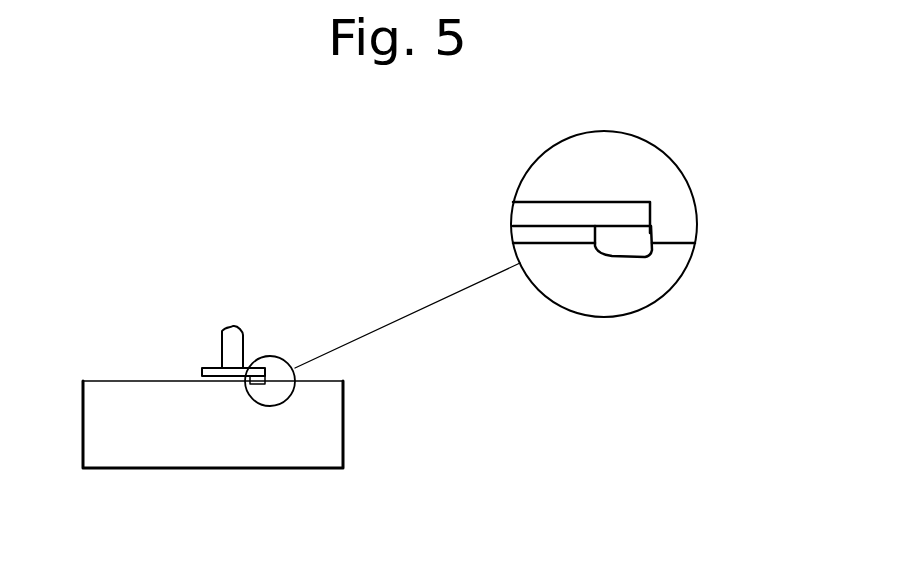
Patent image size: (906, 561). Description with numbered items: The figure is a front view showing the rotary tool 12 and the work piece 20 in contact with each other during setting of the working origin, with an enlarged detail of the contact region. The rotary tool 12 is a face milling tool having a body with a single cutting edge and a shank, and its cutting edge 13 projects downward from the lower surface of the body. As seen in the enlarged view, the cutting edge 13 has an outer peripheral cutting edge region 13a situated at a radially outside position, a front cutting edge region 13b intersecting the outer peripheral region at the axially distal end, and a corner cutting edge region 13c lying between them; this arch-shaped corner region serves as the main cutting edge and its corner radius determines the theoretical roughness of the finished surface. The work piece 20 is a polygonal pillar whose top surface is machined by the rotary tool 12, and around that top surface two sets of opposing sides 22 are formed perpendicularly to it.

The rotary tool 12 is at (230, 348).
The cutting edge 13 is at (725, 393).
The outer peripheral cutting edge region 13a is at (652, 243).
The front cutting edge region 13b is at (625, 258).
The corner cutting edge region 13c is at (650, 257).
The work piece 20 is at (345, 428).
The opposing sides 22 is at (220, 437).